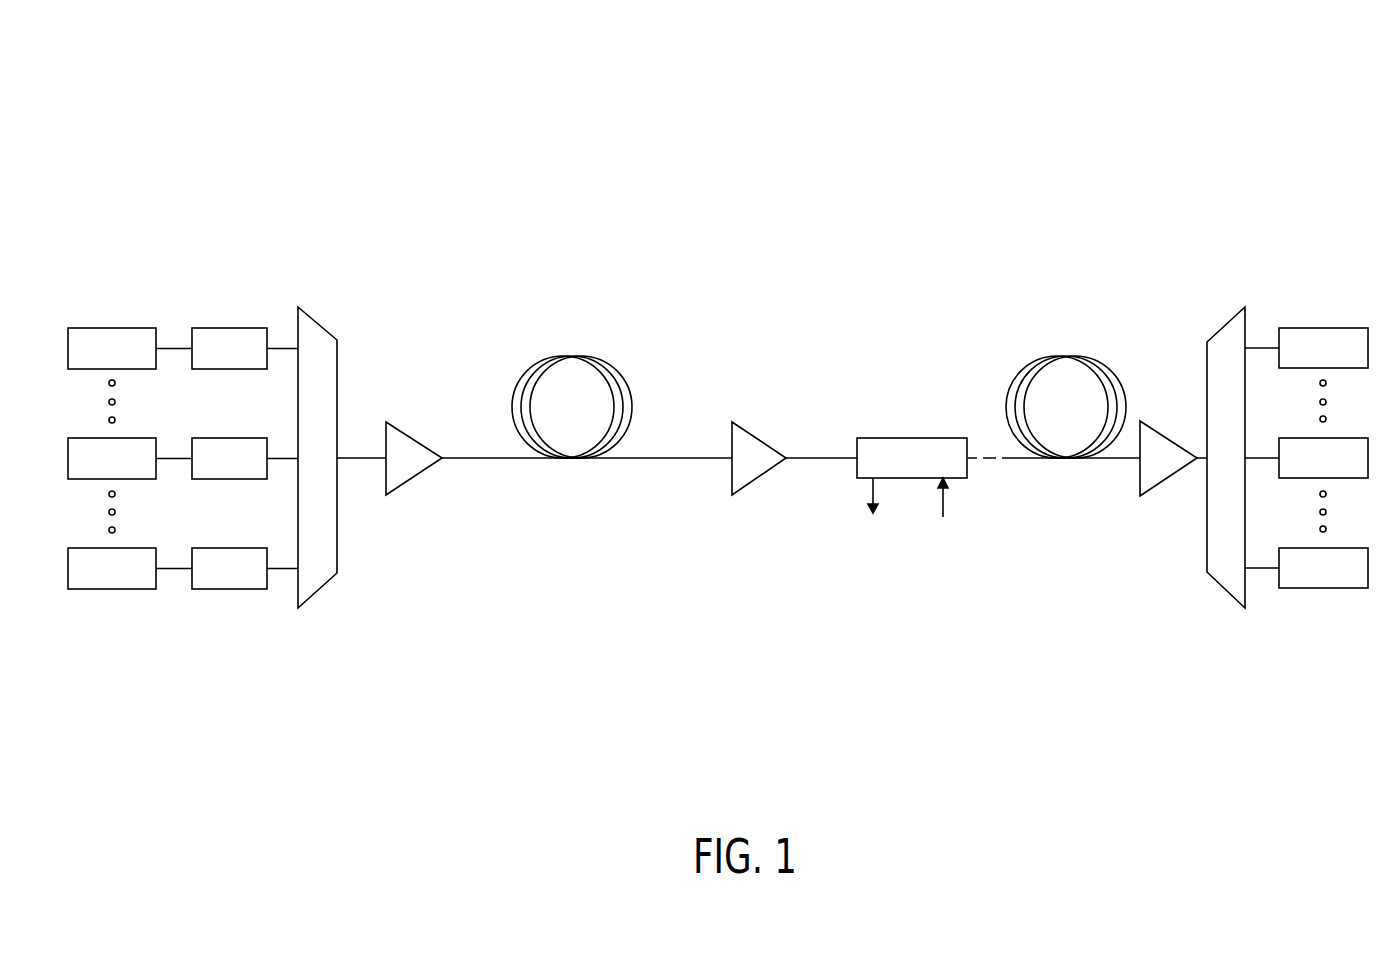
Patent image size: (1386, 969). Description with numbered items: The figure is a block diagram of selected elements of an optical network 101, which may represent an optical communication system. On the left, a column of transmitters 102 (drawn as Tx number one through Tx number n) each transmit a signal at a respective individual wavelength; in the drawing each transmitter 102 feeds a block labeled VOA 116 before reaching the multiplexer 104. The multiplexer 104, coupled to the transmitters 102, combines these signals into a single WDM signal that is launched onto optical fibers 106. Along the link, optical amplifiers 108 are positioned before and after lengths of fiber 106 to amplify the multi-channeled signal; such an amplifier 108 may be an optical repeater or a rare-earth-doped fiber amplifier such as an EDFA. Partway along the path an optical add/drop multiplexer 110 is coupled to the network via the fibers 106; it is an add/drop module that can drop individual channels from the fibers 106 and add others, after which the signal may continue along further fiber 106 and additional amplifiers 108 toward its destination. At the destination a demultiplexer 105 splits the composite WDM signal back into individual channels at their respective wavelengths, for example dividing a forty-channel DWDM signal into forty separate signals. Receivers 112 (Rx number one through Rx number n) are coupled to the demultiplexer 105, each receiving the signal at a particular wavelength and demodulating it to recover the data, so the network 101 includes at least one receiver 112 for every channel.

The optical network 101 is at (159, 56).
The transmitter 102 is at (97, 328).
The multiplexer 104 is at (315, 319).
The demultiplexer 105 is at (1220, 322).
The optical fiber 106 is at (593, 357).
The optical amplifier 108 is at (410, 436).
The optical add/drop multiplexer 110 is at (891, 438).
The receiver 112 is at (1340, 328).
The variable optical attenuator (VOA) 116 is at (224, 328).